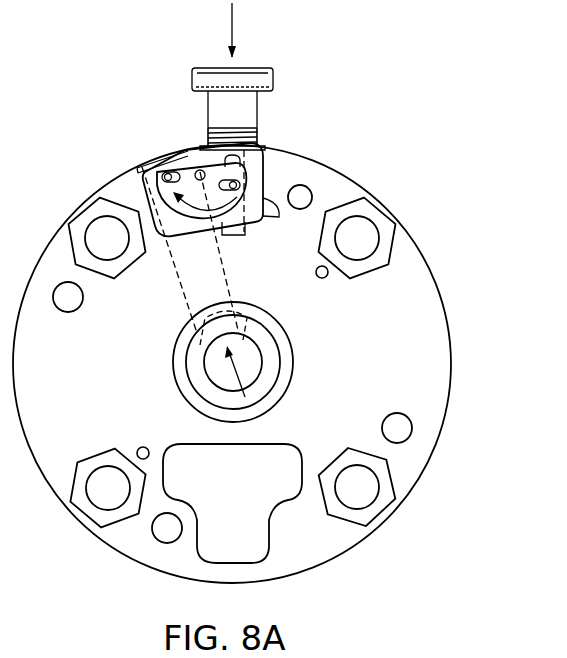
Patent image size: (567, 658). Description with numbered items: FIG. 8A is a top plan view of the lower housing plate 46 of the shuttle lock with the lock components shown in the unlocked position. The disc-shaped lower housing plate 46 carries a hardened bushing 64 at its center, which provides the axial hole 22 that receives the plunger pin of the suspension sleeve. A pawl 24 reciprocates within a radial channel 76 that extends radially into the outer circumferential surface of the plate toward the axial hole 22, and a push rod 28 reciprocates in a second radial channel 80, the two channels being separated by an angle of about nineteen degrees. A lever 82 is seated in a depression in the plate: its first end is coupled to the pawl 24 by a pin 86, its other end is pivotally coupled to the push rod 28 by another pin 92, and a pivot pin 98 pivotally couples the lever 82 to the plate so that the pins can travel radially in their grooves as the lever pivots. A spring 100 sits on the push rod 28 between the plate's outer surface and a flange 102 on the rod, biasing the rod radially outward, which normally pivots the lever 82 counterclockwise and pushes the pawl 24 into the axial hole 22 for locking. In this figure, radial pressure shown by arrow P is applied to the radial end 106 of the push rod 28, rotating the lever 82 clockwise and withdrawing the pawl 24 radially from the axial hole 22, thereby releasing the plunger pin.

The lower housing plate 46 is at (446, 423).
The arrow P is at (230, 31).
The radial end 106 is at (250, 67).
The push rod 28 is at (257, 106).
The spring 100 is at (265, 134).
The flange 102 is at (208, 139).
The radial channel 80 is at (263, 221).
The lever 82 is at (236, 226).
The pin 92 is at (263, 160).
The pin 86 is at (143, 167).
The pivot pin 98 is at (198, 170).
The radial channel 76 is at (172, 265).
The bushing 64 is at (187, 357).
The axial hole 22 is at (203, 373).
The pawl 24 is at (228, 348).